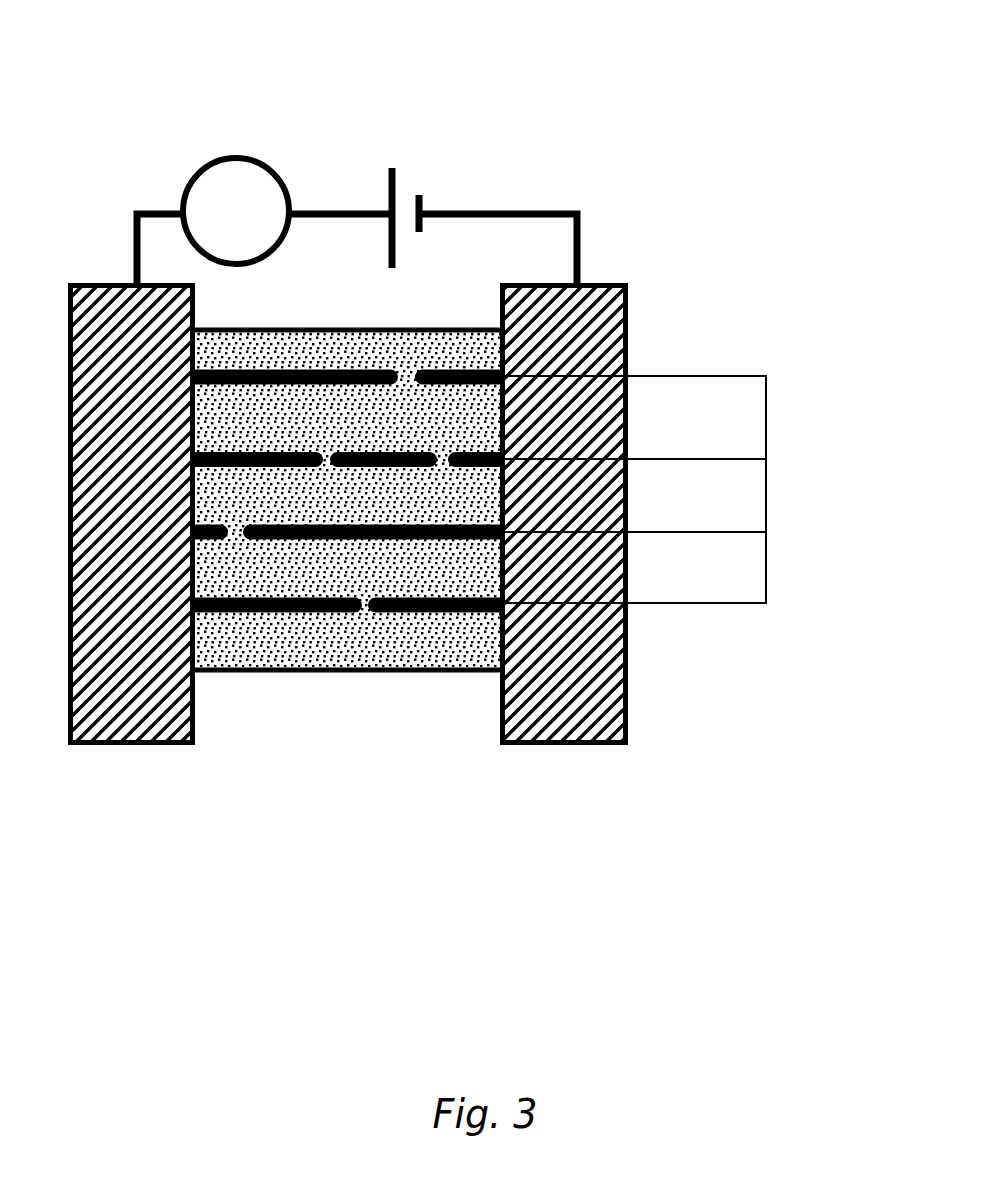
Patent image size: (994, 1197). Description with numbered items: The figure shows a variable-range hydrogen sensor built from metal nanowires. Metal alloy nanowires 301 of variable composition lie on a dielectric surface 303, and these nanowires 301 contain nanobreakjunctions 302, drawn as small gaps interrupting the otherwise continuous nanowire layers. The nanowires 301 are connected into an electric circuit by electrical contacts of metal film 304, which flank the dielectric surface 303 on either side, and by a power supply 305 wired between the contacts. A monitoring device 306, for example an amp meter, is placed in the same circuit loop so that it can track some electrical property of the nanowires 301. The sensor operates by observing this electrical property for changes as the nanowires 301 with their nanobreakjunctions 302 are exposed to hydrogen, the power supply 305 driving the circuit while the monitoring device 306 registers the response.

The metal alloy nanowires 301 is at (766, 486).
The nanobreakjunctions 302 is at (230, 531).
The dielectric surface 303 is at (395, 637).
The electrical contacts of metal film 304 is at (587, 312).
The power supply 305 is at (433, 175).
The monitoring device 306 is at (190, 175).